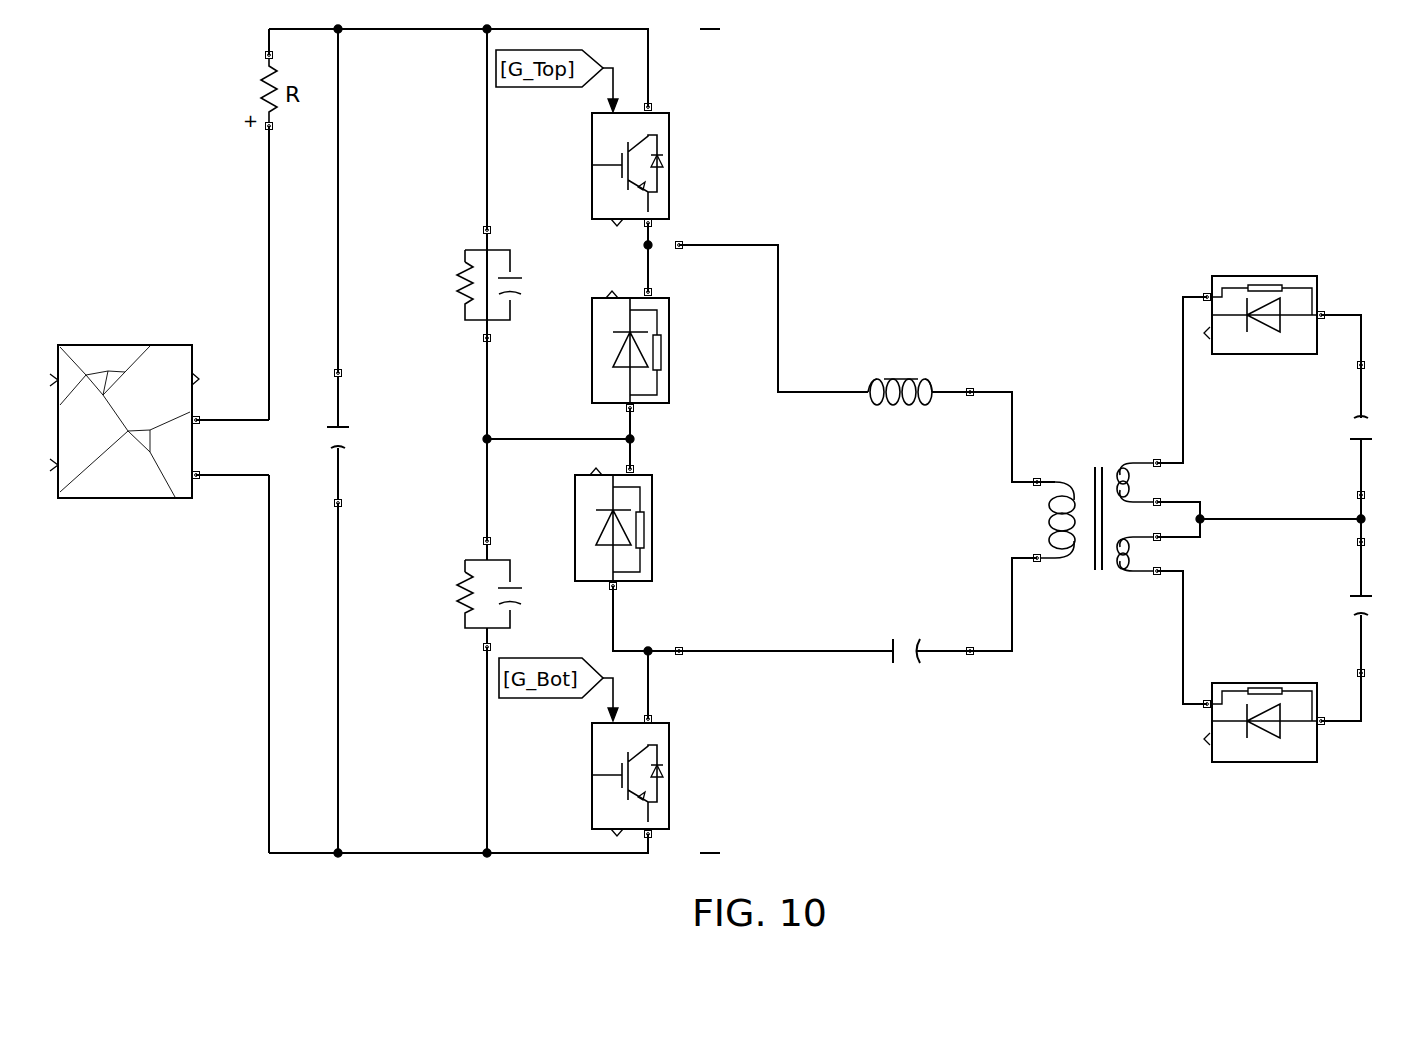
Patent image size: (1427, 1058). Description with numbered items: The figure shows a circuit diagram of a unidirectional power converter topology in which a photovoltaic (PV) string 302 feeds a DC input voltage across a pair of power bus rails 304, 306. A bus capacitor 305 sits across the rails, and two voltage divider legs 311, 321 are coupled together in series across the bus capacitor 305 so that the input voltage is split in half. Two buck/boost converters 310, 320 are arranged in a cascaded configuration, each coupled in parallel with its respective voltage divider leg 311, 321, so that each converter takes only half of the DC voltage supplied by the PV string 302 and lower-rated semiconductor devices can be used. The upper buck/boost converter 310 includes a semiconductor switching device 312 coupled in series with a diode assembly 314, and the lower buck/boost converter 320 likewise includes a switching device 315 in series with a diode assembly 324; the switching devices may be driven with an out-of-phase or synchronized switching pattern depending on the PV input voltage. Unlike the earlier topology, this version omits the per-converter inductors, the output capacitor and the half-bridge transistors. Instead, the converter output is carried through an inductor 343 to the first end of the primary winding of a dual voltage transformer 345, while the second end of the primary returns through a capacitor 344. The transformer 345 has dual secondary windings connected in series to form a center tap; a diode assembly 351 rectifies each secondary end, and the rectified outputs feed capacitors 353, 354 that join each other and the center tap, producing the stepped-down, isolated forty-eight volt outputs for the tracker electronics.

The photovoltaic (PV) string 302 is at (124, 345).
The power bus rail 304 is at (410, 30).
The bus capacitor 305 is at (342, 450).
The power bus rail 306 is at (413, 853).
The buck/boost converter 310 is at (736, 160).
The voltage divider leg 311 is at (440, 262).
The semiconductor switching device 312 is at (664, 112).
The diode assembly 314 is at (670, 327).
The bottom IGBT switch 315 is at (670, 822).
The buck/boost converter 320 is at (768, 757).
The voltage divider leg 321 is at (440, 572).
The diode assembly 324 is at (575, 510).
The inductor 343 is at (929, 382).
The capacitor 344 is at (896, 648).
The dual voltage transformer 345 is at (1066, 402).
The diode assembly 351 is at (1263, 276).
The capacitor 353 is at (1364, 418).
The capacitor 354 is at (1368, 616).